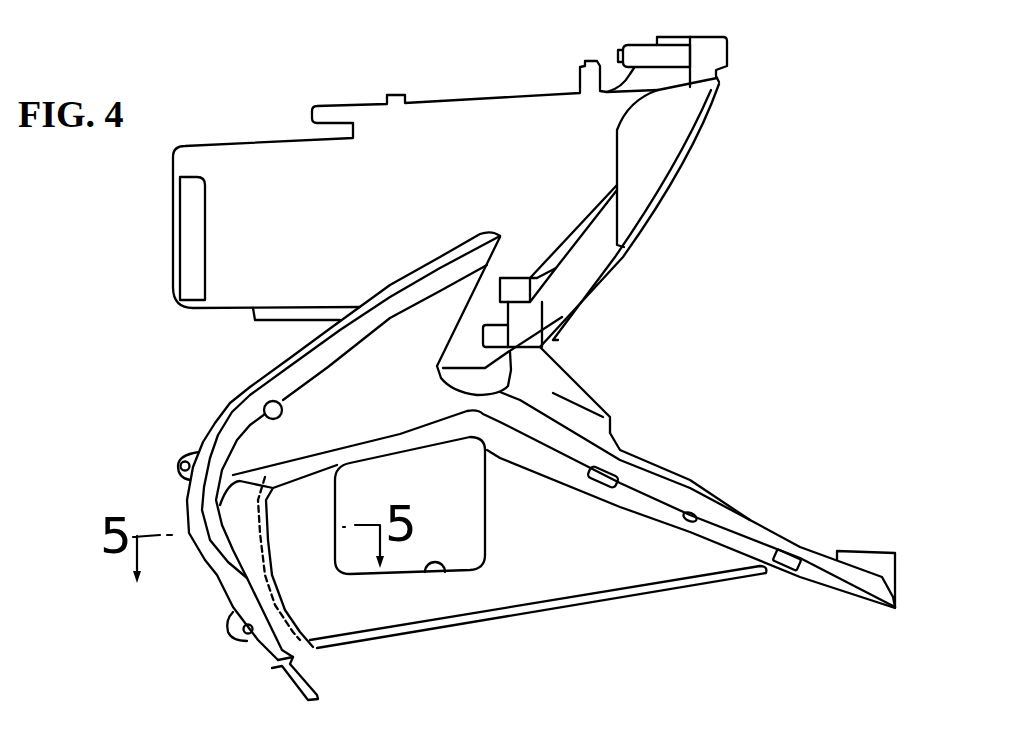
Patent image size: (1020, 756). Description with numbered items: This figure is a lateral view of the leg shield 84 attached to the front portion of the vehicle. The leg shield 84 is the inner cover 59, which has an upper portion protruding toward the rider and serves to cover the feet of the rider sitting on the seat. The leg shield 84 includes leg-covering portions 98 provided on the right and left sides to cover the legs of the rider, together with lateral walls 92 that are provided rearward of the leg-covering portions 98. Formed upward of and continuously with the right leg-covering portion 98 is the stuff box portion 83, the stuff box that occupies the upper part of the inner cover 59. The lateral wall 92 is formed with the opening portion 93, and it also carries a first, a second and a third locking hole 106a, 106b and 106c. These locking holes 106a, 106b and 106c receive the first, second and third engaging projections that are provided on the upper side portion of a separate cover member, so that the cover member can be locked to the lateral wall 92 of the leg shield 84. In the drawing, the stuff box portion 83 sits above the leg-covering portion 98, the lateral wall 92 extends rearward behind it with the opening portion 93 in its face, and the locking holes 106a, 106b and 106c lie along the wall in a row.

The stuff box portion 83 is at (483, 90).
The inner cover 59 is at (482, 466).
The leg shield 84 is at (190, 438).
The leg-covering portion 98 is at (264, 410).
The lateral wall 92 is at (527, 573).
The opening portion 93 is at (443, 565).
The locking hole 106a is at (603, 477).
The locking hole 106b is at (700, 513).
The locking hole 106c is at (797, 553).